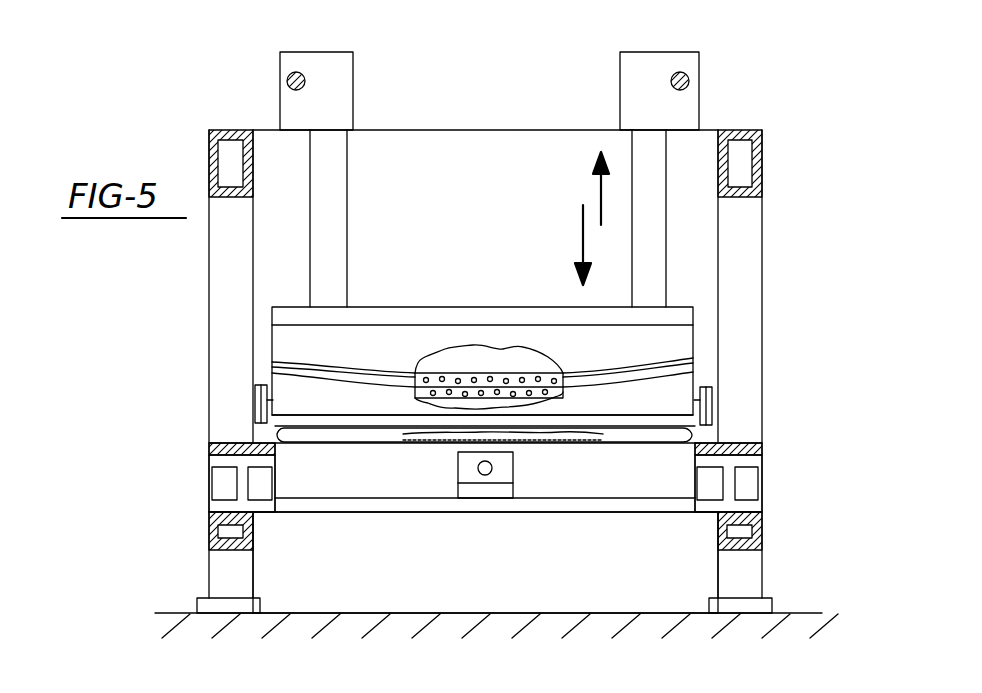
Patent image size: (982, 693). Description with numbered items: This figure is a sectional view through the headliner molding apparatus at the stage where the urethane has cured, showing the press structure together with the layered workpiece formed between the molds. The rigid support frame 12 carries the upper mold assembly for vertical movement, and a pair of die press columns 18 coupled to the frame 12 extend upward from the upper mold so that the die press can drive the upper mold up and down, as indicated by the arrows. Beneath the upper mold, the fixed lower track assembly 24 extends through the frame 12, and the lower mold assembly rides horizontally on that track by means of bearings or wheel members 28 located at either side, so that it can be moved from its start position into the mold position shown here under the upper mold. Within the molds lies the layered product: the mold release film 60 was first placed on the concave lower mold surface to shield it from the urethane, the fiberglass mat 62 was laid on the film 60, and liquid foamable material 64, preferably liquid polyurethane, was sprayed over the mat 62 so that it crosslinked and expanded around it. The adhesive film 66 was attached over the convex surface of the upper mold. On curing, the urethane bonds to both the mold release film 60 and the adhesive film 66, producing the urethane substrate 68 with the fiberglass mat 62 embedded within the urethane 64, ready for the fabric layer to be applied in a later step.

The rigid support frame 12 is at (207, 134).
The die press columns 18 is at (348, 208).
The fixed lower track assembly 24 is at (255, 443).
The wheel members 28 is at (250, 413).
The mold release film 60 is at (535, 400).
The fiberglass mat 62 is at (592, 361).
The liquid foamable material 64 is at (440, 375).
The adhesive film 66 is at (490, 373).
The urethane substrate 68 is at (425, 396).